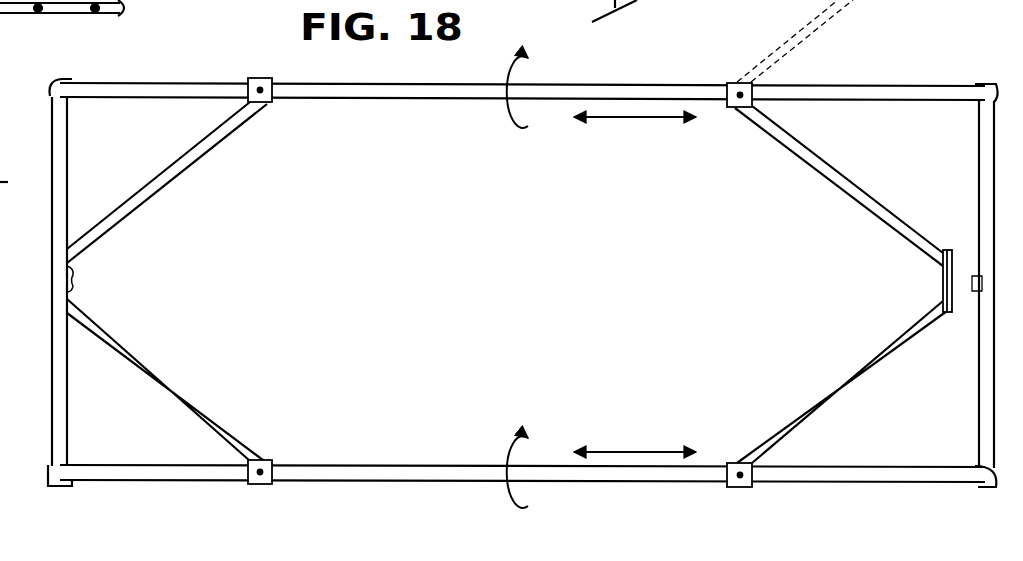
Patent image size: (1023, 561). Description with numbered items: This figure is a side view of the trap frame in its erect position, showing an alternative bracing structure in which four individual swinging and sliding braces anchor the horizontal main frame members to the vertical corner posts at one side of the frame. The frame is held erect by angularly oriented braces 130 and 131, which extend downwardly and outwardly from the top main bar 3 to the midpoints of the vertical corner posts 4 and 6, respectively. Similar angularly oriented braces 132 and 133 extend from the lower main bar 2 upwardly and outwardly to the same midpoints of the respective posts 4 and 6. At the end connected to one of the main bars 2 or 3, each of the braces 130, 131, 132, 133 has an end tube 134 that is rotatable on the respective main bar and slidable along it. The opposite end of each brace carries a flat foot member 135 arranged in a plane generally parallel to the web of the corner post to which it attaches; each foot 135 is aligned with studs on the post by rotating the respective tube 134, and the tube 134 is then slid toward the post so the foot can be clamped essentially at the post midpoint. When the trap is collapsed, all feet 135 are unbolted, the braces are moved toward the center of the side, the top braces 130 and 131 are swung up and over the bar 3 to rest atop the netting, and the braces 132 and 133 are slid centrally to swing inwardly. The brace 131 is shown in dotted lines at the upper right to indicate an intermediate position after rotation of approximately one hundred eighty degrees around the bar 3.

The lower main bar 2 is at (419, 467).
The top main bar 3 is at (350, 102).
The vertical corner post 4 is at (65, 202).
The vertical corner post 6 is at (978, 153).
The brace 130 is at (137, 207).
The brace 131 is at (807, 167).
The brace 132 is at (153, 363).
The brace 133 is at (813, 397).
The end tube 134 is at (272, 103).
The flat foot member 135 is at (948, 252).